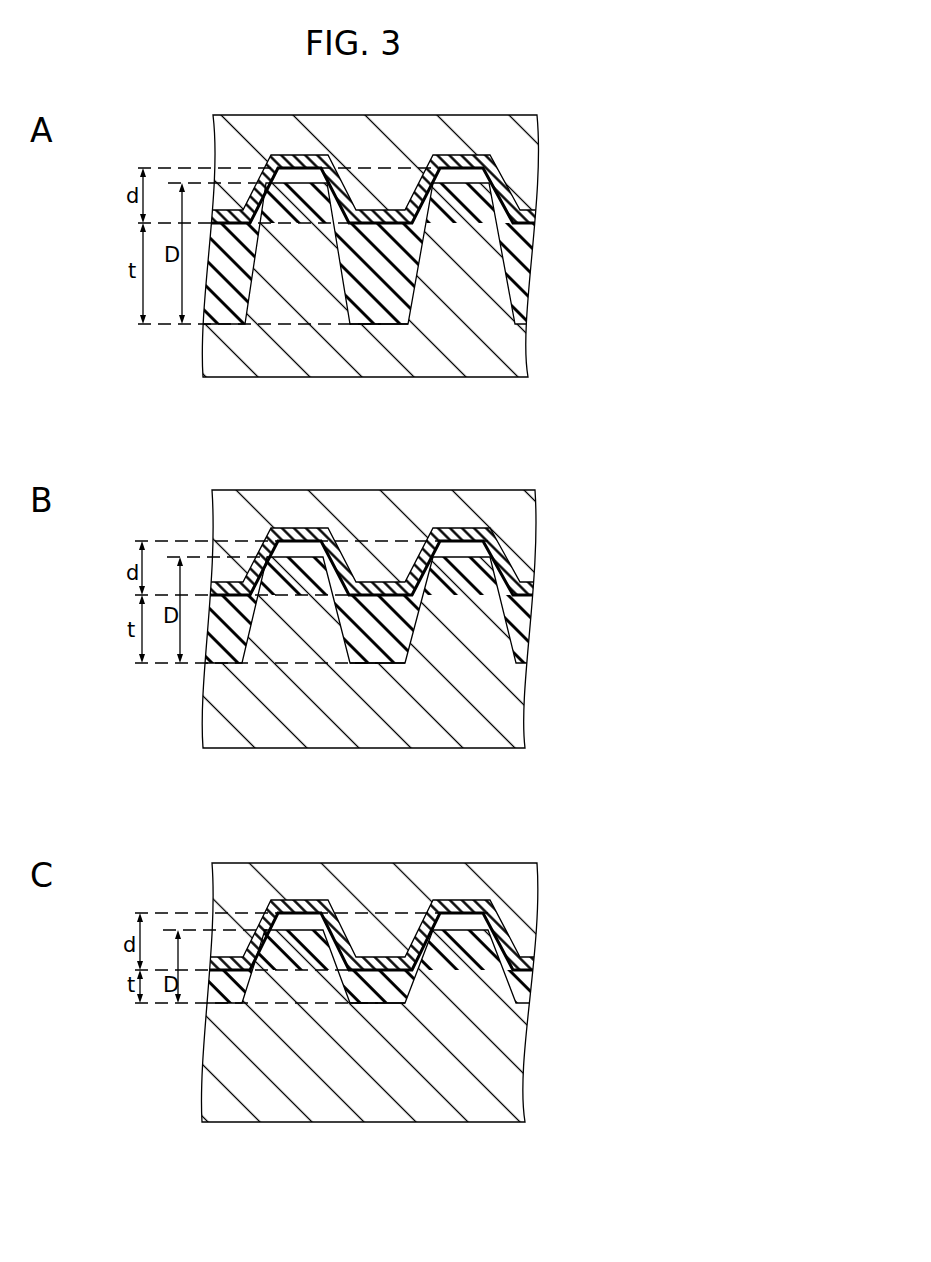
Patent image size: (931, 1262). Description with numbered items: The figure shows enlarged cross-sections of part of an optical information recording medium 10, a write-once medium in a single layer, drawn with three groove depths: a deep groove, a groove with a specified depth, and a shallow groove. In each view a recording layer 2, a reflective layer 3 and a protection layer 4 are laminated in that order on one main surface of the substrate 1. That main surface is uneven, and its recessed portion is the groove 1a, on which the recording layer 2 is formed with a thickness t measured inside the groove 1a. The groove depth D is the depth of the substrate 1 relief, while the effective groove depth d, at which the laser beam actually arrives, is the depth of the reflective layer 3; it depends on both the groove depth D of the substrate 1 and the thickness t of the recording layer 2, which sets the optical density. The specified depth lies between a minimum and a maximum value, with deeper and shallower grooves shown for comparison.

The substrate 1 is at (520, 356).
The groove 1a is at (381, 325).
The recording layer 2 is at (520, 263).
The reflective layer 3 is at (535, 213).
The protection layer 4 is at (533, 161).
The optical information recording medium 10 is at (248, 97).